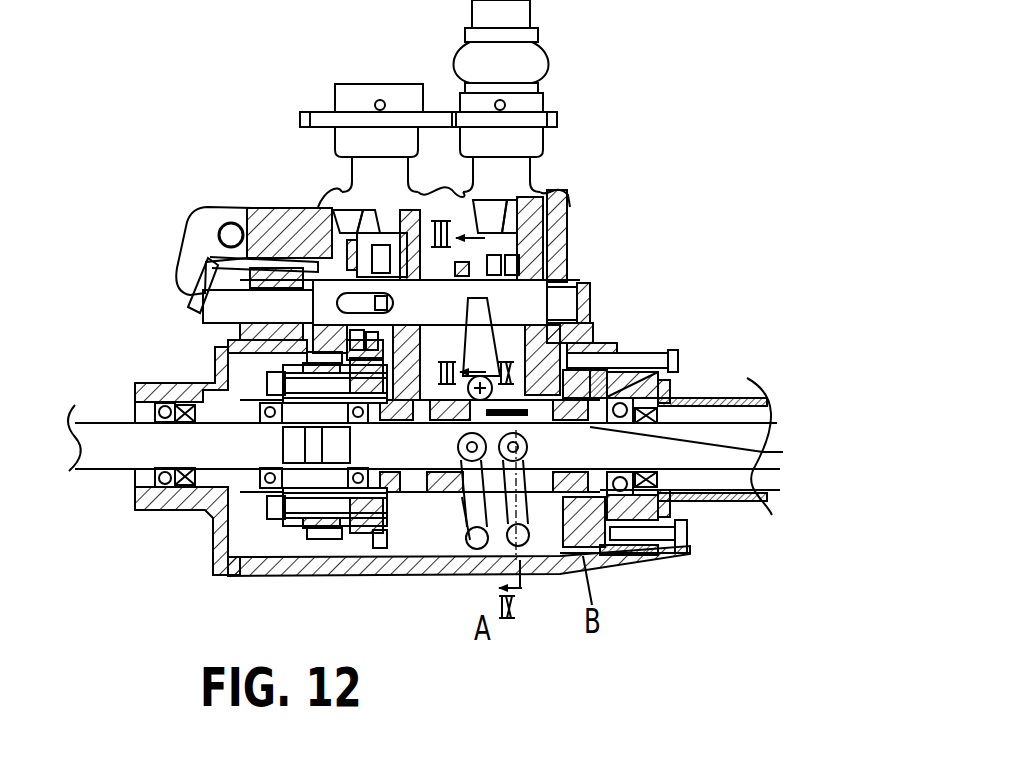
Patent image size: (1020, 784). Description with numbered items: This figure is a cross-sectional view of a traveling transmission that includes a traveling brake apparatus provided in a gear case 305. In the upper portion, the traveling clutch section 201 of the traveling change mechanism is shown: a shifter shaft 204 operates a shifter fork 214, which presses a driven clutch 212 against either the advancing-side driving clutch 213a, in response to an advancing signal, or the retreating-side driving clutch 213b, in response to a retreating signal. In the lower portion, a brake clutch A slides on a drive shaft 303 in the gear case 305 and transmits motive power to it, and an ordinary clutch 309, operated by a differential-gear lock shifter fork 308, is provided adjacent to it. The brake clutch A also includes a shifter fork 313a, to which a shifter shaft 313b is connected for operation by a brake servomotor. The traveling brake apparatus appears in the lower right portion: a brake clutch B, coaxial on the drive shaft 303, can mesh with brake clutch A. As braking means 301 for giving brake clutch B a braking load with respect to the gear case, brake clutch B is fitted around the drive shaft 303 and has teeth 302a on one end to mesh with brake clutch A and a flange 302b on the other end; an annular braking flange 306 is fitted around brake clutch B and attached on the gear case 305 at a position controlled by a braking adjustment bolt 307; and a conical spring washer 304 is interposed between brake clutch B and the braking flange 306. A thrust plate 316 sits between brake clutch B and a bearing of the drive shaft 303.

The traveling clutch section 201 is at (579, 115).
The shifter shaft 204 is at (783, 452).
The driven clutch 212 is at (478, 205).
The driving clutch (advancing side) 213a is at (556, 193).
The driving clutch (retreating side) 213b is at (395, 245).
The shifter fork 214 is at (330, 350).
The braking means 301 is at (585, 283).
The teeth 302a is at (550, 565).
The flange 302b is at (672, 522).
The drive shaft 303 is at (718, 455).
The conical spring washer 304 is at (668, 378).
The gear case 305 is at (592, 367).
The annular braking flange 306 is at (612, 367).
The braking adjustment bolt 307 is at (650, 347).
The differential-gear lock shifter fork 308 is at (462, 512).
The ordinary clutch 309 is at (440, 520).
The shifter fork 313a is at (553, 545).
The shifter shaft 313b is at (536, 560).
The thrust plate 316 is at (607, 550).